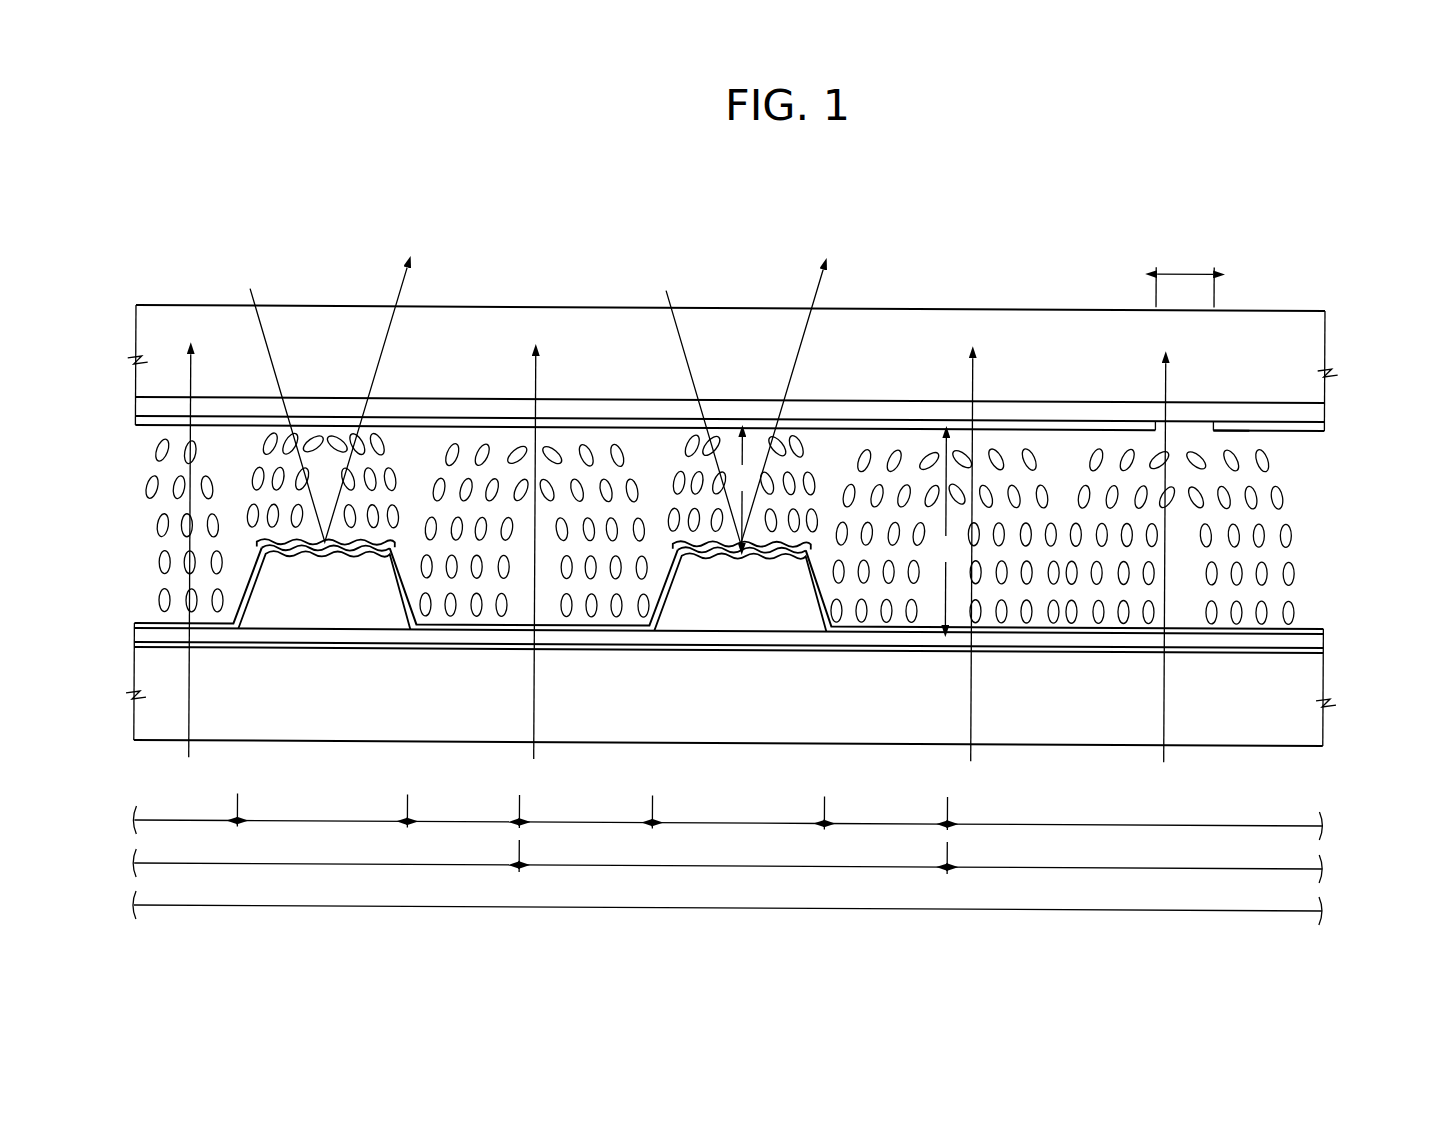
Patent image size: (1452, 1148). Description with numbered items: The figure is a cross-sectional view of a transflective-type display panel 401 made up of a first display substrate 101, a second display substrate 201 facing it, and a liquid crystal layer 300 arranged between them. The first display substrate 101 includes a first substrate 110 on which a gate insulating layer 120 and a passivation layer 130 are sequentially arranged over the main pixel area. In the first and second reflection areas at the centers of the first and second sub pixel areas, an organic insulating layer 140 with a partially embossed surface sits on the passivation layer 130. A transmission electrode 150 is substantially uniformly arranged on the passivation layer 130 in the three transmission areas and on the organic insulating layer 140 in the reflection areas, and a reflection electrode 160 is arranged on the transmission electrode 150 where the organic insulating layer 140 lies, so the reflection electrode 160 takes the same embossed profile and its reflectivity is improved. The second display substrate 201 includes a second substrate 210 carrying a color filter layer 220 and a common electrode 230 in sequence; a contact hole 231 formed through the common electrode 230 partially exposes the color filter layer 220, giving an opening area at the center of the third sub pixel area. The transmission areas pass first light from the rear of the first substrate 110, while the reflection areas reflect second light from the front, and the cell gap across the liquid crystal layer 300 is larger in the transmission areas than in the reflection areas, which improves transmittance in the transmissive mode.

The transflective-type display panel 401 is at (752, 212).
The first display substrate 101 is at (1392, 600).
The first substrate 110 is at (1325, 712).
The gate insulating layer 120 is at (1325, 651).
The passivation layer 130 is at (1325, 636).
The organic insulating layer 140 is at (360, 610).
The transmission electrode 150 is at (1325, 628).
The reflection electrode 160 is at (297, 550).
The second display substrate 201 is at (1392, 325).
The second substrate 210 is at (1325, 336).
The color filter layer 220 is at (1325, 412).
The common electrode 230 is at (1325, 428).
The contact hole 231 is at (1173, 443).
The liquid crystal layer 300 is at (1290, 531).